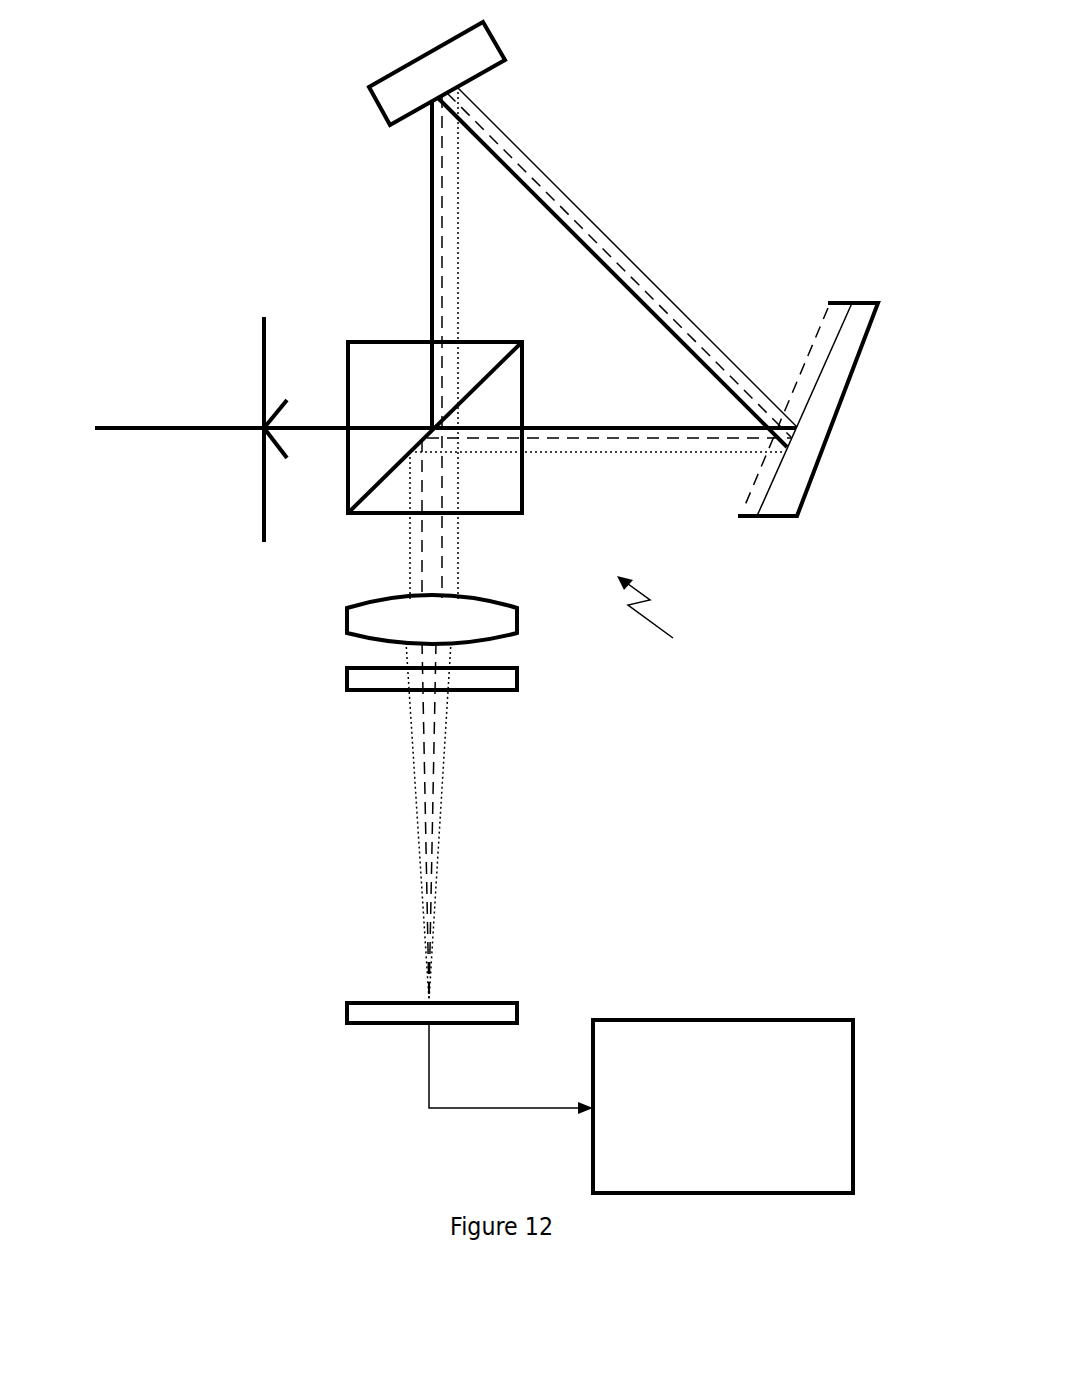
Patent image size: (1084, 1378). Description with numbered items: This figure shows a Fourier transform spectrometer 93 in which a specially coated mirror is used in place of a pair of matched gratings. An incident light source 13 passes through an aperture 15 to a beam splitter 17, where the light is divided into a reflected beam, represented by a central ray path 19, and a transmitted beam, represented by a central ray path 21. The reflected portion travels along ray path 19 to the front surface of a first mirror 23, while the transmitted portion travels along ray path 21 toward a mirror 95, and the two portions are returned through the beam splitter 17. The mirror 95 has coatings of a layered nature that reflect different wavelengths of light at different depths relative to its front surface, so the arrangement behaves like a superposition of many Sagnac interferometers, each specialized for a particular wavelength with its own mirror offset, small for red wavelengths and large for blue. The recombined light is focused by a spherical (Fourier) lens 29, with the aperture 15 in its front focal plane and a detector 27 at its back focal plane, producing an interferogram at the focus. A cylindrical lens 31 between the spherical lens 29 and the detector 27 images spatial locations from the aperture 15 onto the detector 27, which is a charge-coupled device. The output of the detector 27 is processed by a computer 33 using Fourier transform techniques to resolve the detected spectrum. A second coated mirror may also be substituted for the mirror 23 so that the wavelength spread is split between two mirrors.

The incident light source 13 is at (234, 427).
The aperture 15 is at (265, 347).
The beam splitter 17 is at (495, 342).
The central ray path of reflected beam 19 is at (432, 222).
The central ray path of transmitted beam 21 is at (614, 427).
The first mirror 23 is at (390, 72).
The detector 27 is at (347, 1012).
The spherical (Fourier) lens 29 is at (347, 622).
The cylindrical lens 31 is at (347, 676).
The computer 33 is at (722, 1020).
The Fourier transform spectrometer 93 is at (658, 624).
The mirror 95 is at (840, 405).